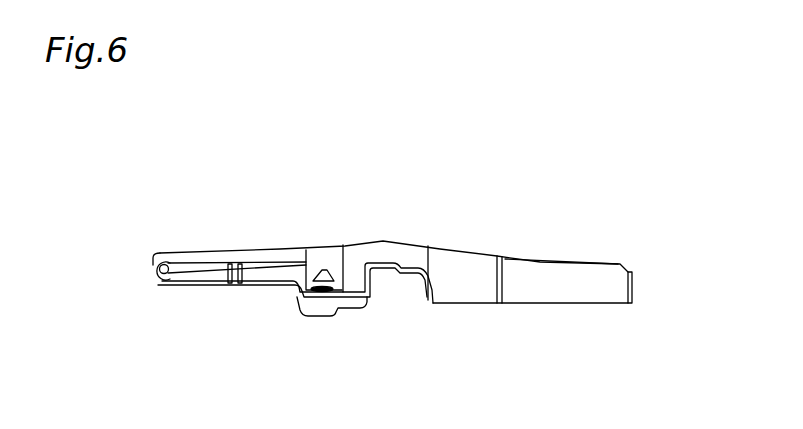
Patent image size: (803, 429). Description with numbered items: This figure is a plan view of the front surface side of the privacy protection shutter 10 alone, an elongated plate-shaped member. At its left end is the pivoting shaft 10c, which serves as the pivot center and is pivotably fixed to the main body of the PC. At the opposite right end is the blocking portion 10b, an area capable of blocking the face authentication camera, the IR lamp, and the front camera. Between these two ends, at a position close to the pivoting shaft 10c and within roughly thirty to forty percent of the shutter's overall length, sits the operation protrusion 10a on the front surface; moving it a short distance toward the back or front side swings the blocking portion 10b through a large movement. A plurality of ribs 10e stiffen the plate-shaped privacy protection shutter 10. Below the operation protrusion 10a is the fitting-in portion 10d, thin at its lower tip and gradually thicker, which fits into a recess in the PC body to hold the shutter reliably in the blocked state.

The privacy protection shutter 10 is at (530, 168).
The operation protrusion 10a is at (318, 288).
The blocking portion 10b is at (568, 275).
The pivoting shaft 10c is at (161, 288).
The fitting-in portion 10d is at (313, 317).
The ribs 10e is at (497, 300).